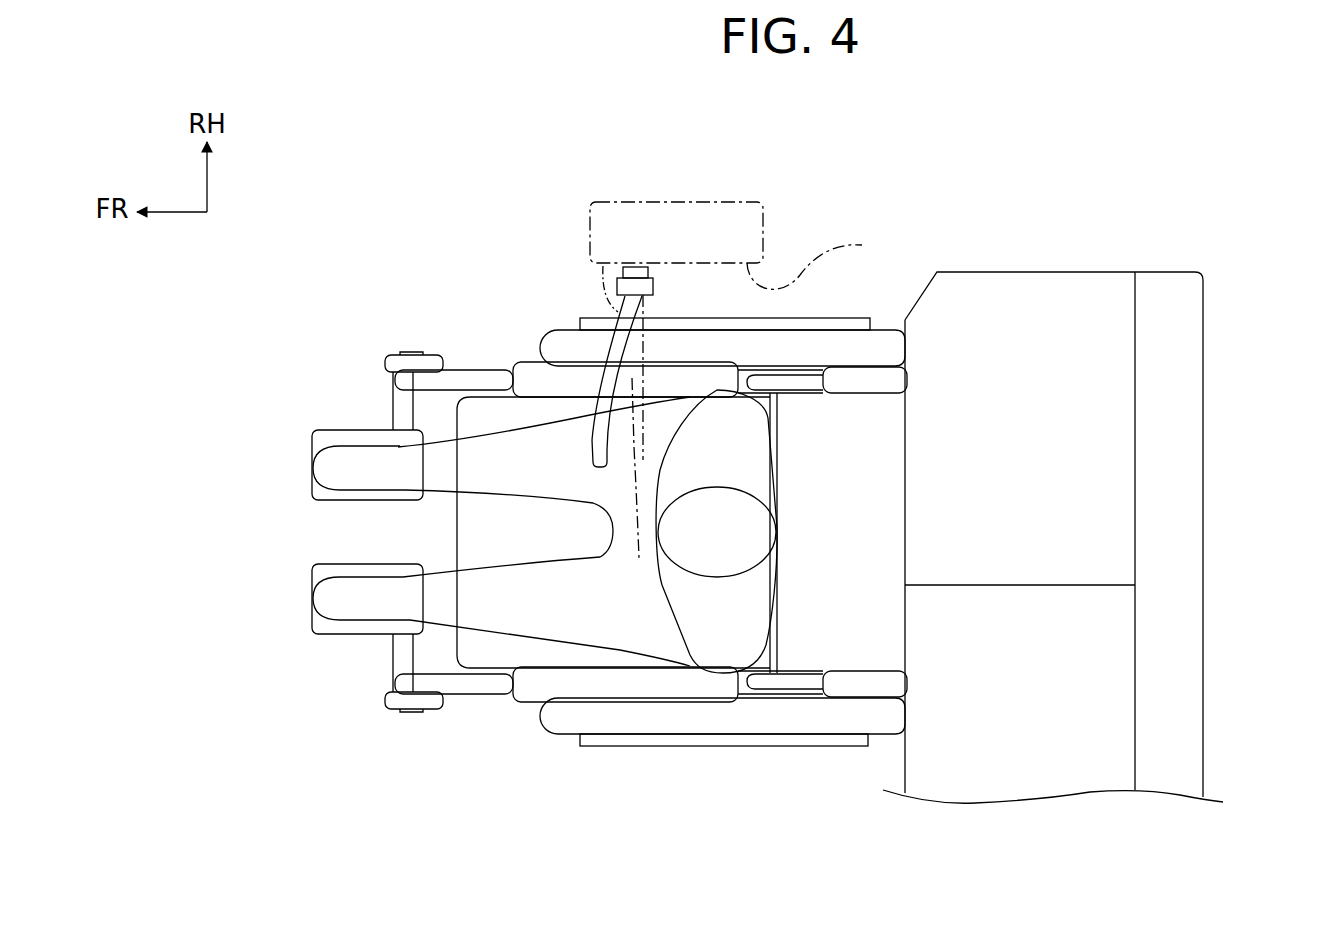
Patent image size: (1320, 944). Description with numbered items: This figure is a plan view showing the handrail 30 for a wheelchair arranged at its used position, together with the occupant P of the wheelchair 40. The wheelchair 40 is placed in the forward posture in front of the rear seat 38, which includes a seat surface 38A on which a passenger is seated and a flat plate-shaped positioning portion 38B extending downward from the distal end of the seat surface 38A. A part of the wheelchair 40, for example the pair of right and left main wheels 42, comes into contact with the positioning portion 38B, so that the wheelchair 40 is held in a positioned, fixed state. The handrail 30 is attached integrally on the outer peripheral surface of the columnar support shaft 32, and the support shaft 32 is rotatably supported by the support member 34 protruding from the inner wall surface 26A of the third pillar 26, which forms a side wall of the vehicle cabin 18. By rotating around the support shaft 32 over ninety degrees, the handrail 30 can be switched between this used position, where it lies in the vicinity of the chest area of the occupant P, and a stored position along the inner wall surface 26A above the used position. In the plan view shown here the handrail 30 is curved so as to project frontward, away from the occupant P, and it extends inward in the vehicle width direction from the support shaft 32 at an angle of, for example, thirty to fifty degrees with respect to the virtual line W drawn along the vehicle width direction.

The vehicle cabin 18 is at (443, 763).
The third pillar 26 is at (770, 201).
The inner wall surface 26A is at (835, 259).
The handrail 30 is at (593, 453).
The support shaft 32 is at (655, 285).
The support member 34 is at (633, 272).
The rear seat 38 is at (1110, 452).
The seat surface 38A is at (1045, 297).
The positioning portion 38B is at (905, 408).
The wheelchair 40 is at (782, 617).
The main wheels 42 is at (907, 343).
The occupant P is at (740, 532).
The virtual line W is at (638, 442).